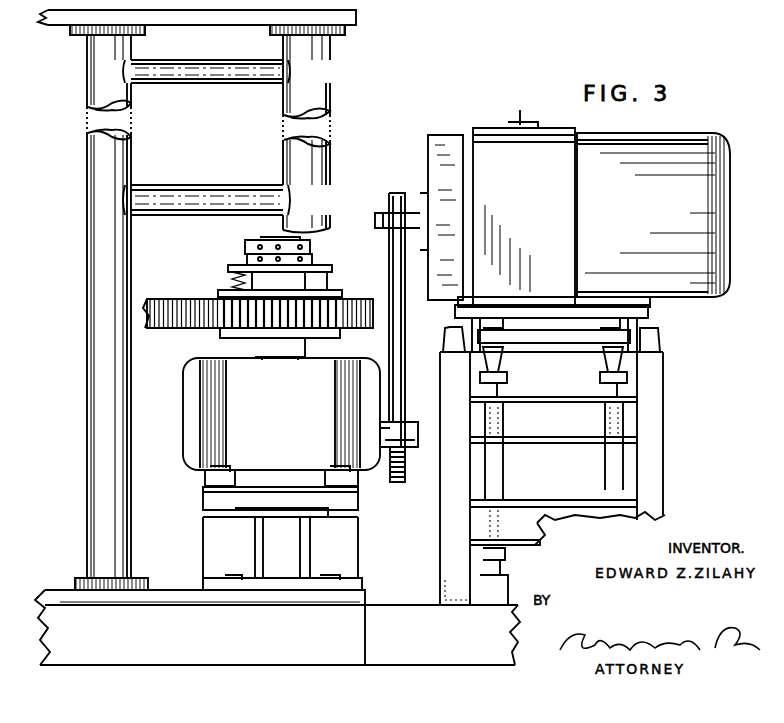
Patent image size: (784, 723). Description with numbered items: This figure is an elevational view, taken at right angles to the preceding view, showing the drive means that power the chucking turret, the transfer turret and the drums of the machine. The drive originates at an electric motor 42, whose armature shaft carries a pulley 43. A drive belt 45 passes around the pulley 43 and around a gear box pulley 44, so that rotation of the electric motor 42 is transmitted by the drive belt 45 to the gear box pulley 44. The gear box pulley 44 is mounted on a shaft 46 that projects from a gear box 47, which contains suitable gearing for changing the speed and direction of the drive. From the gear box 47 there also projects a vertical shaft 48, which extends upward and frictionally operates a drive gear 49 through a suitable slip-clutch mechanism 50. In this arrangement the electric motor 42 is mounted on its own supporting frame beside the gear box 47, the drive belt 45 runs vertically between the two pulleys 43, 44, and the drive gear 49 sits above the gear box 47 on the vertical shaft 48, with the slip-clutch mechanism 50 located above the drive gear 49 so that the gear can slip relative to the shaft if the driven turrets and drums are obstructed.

The electric motor 42 is at (686, 150).
The pulley 43 is at (403, 192).
The gear box pulley 44 is at (412, 480).
The drive belt 45 is at (392, 262).
The shaft 46 is at (388, 448).
The gear box 47 is at (190, 422).
The vertical shaft 48 is at (265, 356).
The drive gear 49 is at (222, 305).
The slip-clutch mechanism 50 is at (232, 262).